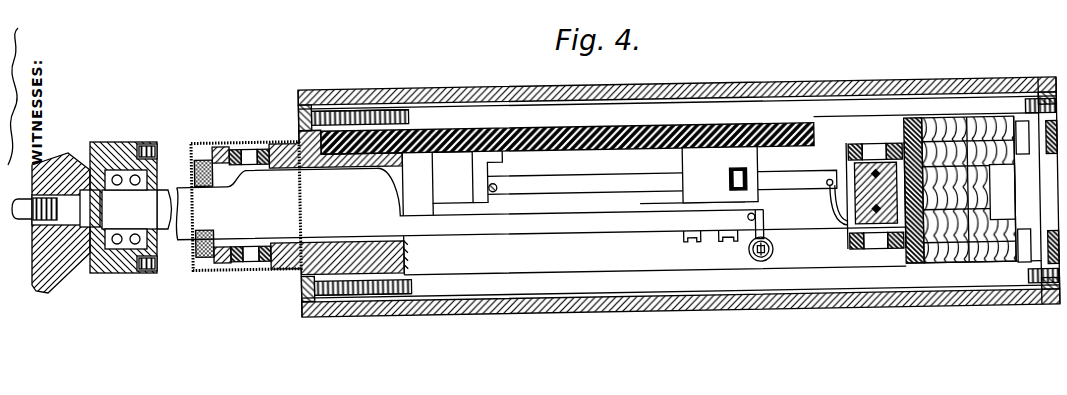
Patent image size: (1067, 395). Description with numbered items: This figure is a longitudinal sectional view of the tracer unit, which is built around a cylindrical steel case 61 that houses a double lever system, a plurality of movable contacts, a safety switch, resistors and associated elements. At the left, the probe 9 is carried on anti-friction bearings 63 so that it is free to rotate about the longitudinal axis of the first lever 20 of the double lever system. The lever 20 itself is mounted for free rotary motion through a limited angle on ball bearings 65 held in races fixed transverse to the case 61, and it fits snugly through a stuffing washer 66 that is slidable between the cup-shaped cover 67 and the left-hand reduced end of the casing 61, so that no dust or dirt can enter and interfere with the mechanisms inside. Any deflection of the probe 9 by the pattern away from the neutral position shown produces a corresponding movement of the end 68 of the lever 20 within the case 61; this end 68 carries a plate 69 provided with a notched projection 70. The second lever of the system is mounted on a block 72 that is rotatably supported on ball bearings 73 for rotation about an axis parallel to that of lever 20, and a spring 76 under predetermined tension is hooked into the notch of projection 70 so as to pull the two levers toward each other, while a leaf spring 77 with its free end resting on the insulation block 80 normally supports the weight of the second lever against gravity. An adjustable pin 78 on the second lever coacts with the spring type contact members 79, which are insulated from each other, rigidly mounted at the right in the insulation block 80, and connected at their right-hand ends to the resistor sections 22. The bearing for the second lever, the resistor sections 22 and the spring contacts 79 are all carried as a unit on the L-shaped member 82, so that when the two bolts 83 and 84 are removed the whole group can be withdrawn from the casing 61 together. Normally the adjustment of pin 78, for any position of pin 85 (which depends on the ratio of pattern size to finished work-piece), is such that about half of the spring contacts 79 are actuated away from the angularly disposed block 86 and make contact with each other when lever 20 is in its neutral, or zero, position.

The probe 9 is at (68, 275).
The first lever 20 is at (440, 228).
The resistor sections 22 is at (955, 262).
The cylindrical steel case 61 is at (747, 314).
The anti-friction bearings 63 is at (130, 265).
The ball bearings 65 is at (268, 261).
The stuffing washer 66 is at (208, 260).
The cup-shaped cover 67 is at (222, 134).
The end of the lever 68 is at (763, 214).
The plate 69 is at (678, 233).
The notched projection 70 is at (748, 253).
The block 72 is at (850, 228).
The ball bearings 73 is at (862, 250).
The spring 76 is at (773, 252).
The leaf spring 77 is at (730, 179).
The adjustable pin 78 is at (498, 185).
The spring type contact members 79 is at (617, 176).
The insulation block 80 is at (748, 162).
The L-shaped member 82 is at (566, 148).
The bolt 83 is at (743, 111).
The bolt 84 is at (557, 290).
The pin 85 is at (755, 220).
The angularly disposed block 86 is at (443, 185).